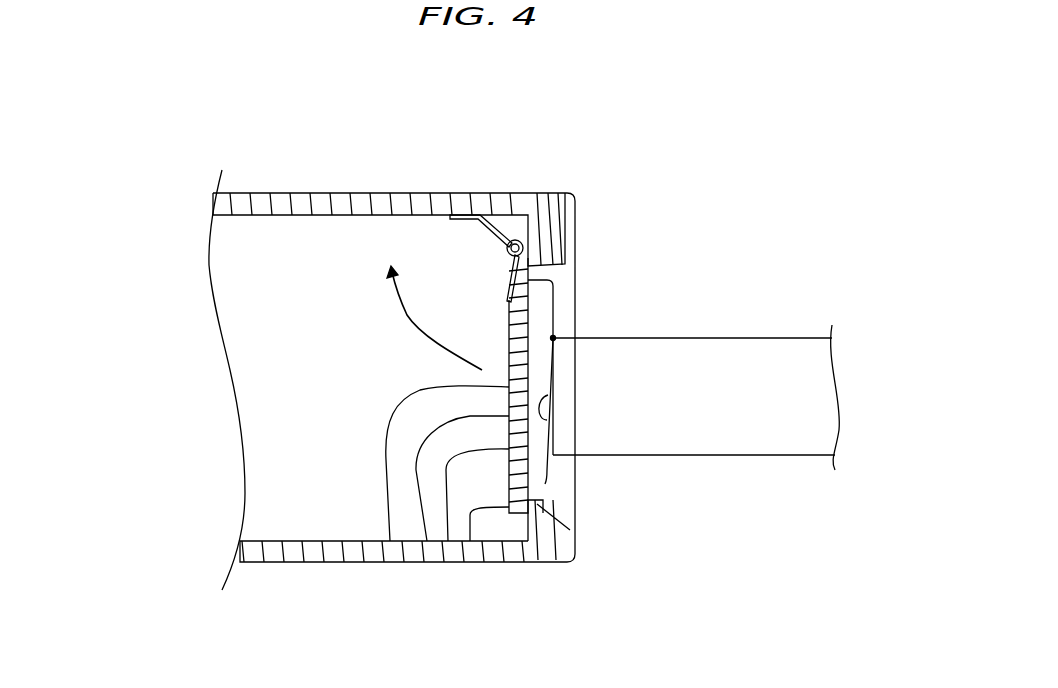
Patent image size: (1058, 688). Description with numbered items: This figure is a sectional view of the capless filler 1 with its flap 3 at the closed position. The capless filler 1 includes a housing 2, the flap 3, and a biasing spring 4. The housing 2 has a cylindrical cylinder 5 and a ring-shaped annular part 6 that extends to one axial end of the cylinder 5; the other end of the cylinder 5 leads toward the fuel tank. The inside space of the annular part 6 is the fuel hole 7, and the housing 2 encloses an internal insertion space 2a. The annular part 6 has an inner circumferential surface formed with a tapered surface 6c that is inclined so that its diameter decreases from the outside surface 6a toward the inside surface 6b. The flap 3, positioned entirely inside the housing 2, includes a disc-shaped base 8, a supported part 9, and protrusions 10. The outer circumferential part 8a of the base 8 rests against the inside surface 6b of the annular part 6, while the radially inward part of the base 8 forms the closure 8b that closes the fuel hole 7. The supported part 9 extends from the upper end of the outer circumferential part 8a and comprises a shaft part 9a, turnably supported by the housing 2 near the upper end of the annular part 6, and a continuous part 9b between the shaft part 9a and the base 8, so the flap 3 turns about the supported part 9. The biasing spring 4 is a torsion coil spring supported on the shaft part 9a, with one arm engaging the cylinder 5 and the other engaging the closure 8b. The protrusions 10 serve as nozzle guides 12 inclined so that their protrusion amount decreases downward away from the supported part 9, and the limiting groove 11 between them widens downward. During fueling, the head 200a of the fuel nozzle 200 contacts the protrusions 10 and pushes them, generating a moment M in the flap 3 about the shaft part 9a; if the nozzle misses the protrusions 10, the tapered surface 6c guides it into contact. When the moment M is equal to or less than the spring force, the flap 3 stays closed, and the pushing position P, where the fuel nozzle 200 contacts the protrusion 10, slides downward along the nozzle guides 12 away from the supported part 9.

The capless filler 1 is at (184, 149).
The housing 2 is at (260, 193).
The insertion space 2a is at (258, 277).
The flap 3 is at (448, 541).
The biasing spring 4 is at (510, 258).
The cylinder 5 is at (310, 563).
The annular part 6 is at (568, 236).
The outside surface 6a is at (558, 236).
The inside surface 6b is at (525, 527).
The tapered surface 6c is at (557, 506).
The fuel hole 7 is at (552, 502).
The base 8 is at (427, 541).
The outer circumferential part 8a is at (470, 541).
The closure 8b is at (390, 541).
The supported part 9 is at (516, 240).
The shaft part 9a is at (507, 251).
The continuous part 9b is at (538, 264).
The protrusions 10 is at (541, 291).
The limiting groove 11 is at (548, 485).
The nozzle guides 12 is at (540, 308).
The moment M is at (410, 321).
The pushing position P is at (556, 337).
The fuel nozzle 200 is at (795, 449).
The head 200a is at (549, 418).